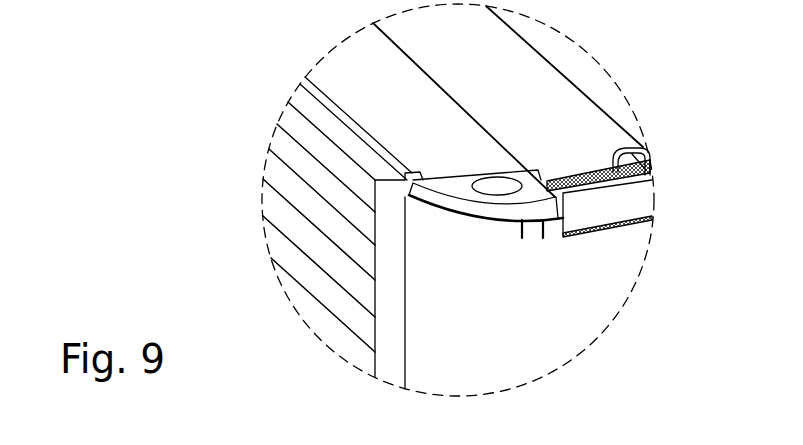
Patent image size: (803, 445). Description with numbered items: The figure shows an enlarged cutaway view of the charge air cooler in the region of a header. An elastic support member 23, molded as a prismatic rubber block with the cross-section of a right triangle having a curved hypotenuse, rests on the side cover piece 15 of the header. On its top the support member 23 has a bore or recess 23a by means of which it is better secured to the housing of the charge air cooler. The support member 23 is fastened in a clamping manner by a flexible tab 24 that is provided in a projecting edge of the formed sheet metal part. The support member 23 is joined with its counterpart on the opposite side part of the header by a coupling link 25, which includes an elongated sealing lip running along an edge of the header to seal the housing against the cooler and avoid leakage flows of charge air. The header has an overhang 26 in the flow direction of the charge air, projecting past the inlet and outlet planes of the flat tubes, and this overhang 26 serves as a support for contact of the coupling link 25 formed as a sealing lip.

The side cover piece 15 is at (620, 203).
The elastic support member 23 is at (457, 187).
The bore or recess 23a is at (500, 187).
The flexible tab 24 is at (533, 230).
The coupling link 25 is at (387, 215).
The overhang 26 is at (413, 305).